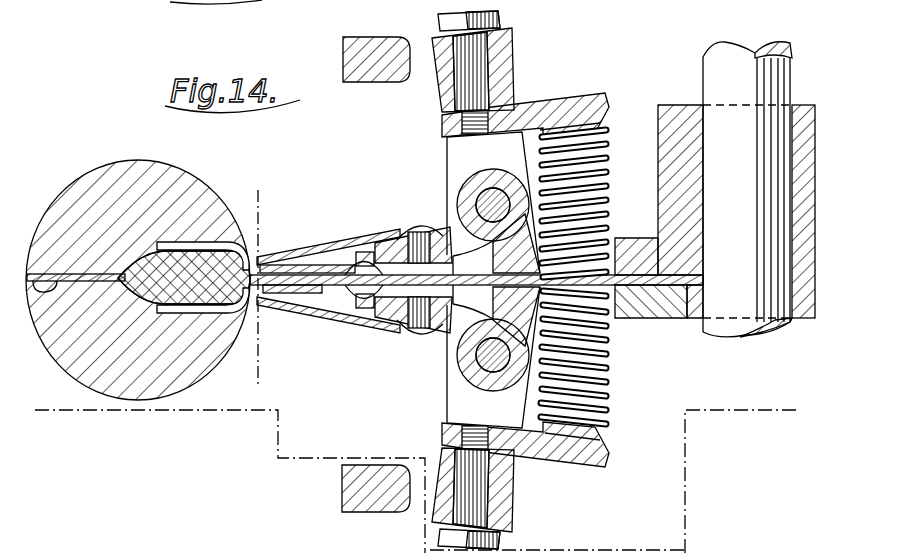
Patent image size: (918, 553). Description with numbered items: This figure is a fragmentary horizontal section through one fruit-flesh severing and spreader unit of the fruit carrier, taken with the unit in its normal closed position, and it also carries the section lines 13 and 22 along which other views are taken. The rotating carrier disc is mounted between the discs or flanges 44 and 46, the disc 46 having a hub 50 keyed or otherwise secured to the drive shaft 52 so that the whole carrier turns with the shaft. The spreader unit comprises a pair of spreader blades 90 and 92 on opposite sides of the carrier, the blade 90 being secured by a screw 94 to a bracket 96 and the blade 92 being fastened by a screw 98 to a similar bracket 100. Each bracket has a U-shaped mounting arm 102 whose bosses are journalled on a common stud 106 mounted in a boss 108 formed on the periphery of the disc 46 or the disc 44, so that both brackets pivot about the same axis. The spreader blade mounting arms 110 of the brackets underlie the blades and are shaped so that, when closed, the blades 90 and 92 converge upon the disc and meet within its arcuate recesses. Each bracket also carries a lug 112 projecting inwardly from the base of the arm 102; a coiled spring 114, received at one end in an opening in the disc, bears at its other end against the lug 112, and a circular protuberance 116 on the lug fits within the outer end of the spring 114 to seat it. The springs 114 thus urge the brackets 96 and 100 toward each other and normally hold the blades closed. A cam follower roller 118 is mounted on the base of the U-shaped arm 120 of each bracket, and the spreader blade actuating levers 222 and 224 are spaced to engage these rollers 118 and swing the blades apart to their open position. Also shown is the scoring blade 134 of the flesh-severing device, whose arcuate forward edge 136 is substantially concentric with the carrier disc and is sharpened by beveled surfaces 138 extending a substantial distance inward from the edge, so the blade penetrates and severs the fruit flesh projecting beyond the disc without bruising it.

The section line 13— 13 is at (50, 385).
The section line 22— 22 is at (278, 195).
The disc 44 is at (657, 317).
The disc 46 is at (630, 243).
The hub 50 is at (663, 107).
The shaft 52 is at (700, 60).
The spreader blade 90 is at (283, 252).
The spreader blade 92 is at (328, 310).
The screw 94 is at (387, 232).
The bracket 96 is at (437, 212).
The screw 98 is at (407, 325).
The bracket 100 is at (460, 317).
The U-shaped mounting arm 102 is at (450, 140).
The stud 106 is at (455, 196).
The boss 108 is at (457, 173).
The spreader blade mounting arm 110 is at (368, 240).
The lug 112 is at (543, 103).
The coiled spring 114 is at (600, 157).
The circular protuberance 116 is at (563, 120).
The roller 118 is at (508, 38).
The U-shaped arm 120 is at (500, 18).
The scoring blade 134 is at (69, 294).
The arcuate forward edge 136 is at (112, 250).
The beveled surfaces 138 is at (65, 275).
The spreader blade actuating lever 222 is at (375, 505).
The spreader blade actuating lever 224 is at (353, 82).